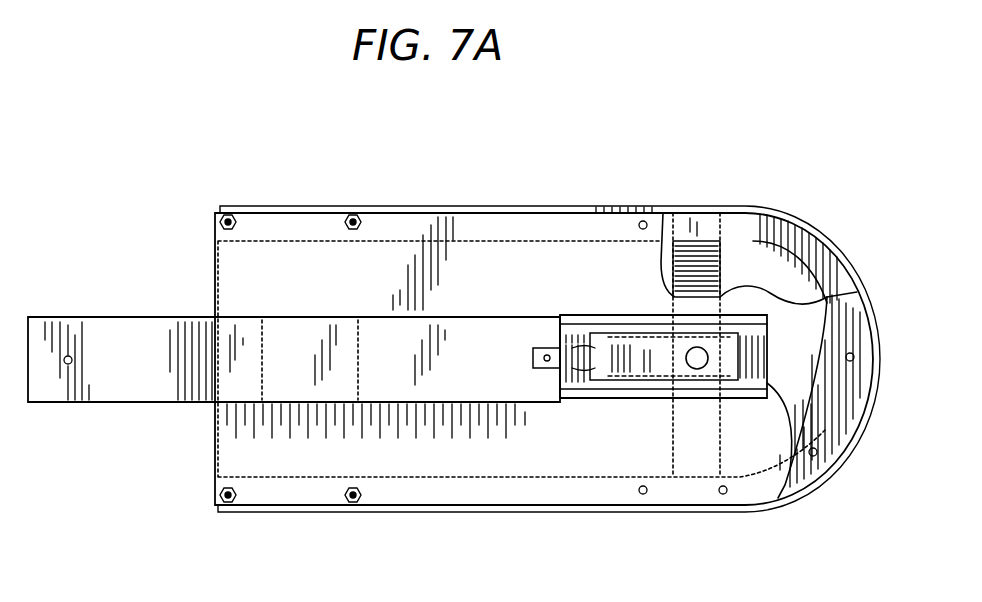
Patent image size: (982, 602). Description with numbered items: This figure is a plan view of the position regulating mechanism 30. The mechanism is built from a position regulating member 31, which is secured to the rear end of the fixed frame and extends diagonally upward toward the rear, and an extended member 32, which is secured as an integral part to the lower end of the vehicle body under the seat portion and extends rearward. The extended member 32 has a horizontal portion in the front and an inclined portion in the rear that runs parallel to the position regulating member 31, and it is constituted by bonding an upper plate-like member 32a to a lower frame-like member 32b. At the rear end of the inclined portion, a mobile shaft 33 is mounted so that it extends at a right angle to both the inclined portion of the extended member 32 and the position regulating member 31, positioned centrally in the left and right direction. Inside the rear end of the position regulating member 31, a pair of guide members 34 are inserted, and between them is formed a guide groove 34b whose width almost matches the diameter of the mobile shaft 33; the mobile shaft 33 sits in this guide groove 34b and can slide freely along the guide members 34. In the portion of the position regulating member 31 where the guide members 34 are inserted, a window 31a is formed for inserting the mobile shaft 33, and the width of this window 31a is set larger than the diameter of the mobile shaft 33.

The position regulating mechanism 30 is at (292, 156).
The position regulating member 31 is at (150, 393).
The window 31a is at (733, 365).
The extended member 32 is at (832, 171).
The upper plate-like member 32a is at (602, 262).
The lower frame-like member 32b is at (763, 228).
The mobile shaft 33 is at (680, 350).
The guide members 34 is at (548, 372).
The guide groove 34b is at (757, 347).